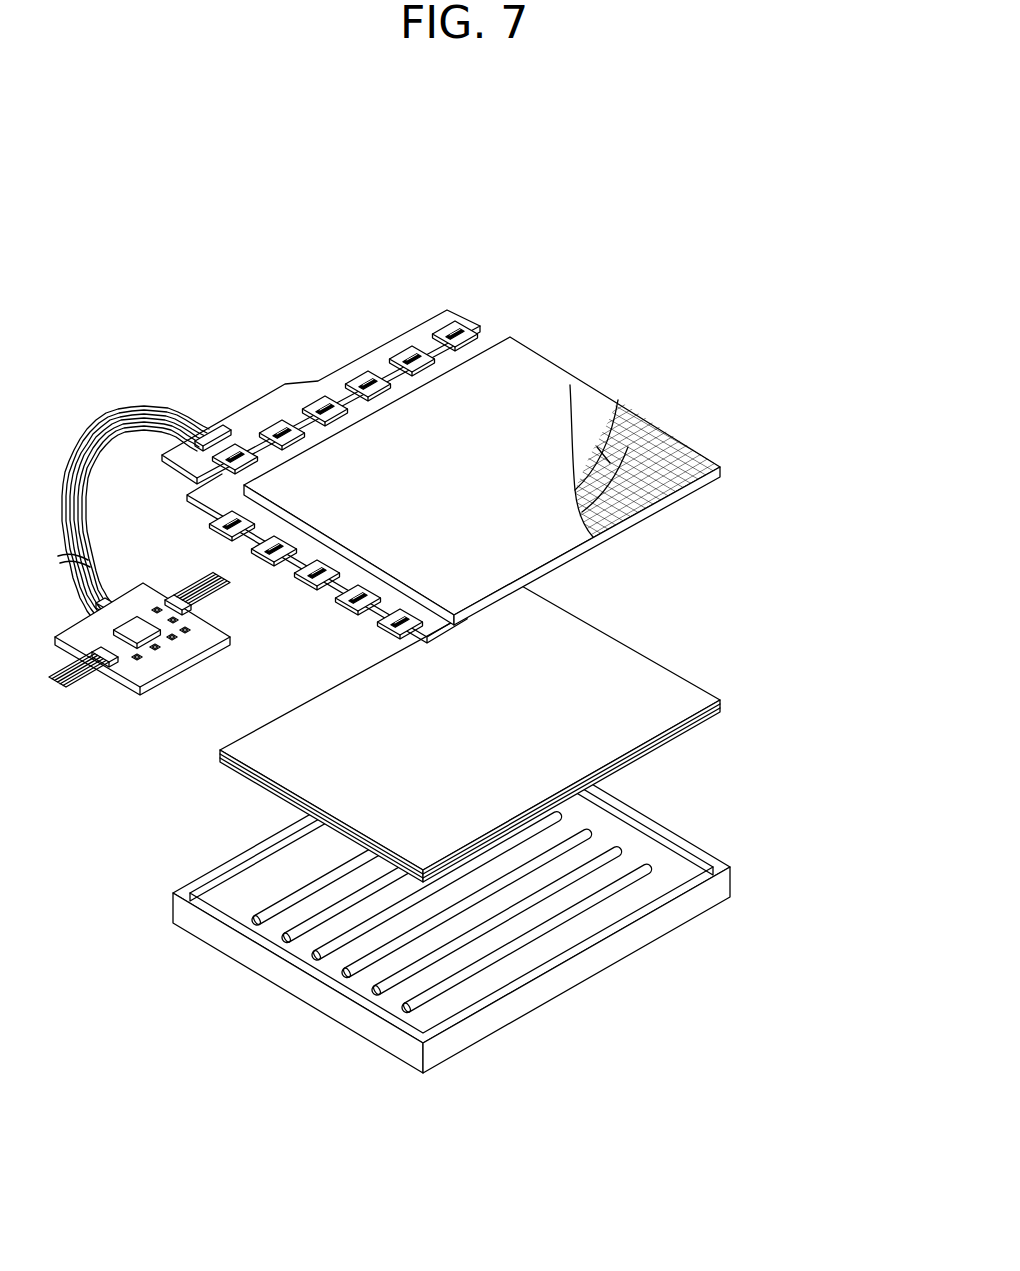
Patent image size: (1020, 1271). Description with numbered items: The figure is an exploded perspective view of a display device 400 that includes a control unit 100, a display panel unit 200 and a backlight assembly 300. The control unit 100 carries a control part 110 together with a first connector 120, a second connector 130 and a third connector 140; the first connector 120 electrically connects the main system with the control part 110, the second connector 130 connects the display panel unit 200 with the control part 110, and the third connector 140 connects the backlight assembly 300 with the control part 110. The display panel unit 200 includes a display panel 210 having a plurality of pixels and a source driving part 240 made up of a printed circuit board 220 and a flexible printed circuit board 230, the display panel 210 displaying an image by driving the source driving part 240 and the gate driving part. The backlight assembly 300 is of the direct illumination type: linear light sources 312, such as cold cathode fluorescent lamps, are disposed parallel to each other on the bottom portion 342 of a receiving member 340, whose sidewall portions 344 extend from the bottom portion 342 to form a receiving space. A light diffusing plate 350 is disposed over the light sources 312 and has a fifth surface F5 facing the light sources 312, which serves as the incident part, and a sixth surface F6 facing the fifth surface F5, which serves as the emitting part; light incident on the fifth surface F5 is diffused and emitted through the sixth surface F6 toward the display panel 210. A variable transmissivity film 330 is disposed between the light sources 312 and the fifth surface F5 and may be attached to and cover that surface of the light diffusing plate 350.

The control unit 100 is at (175, 609).
The control part 110 is at (137, 618).
The first connector 120 is at (90, 683).
The second connector 130 is at (122, 428).
The third connector 140 is at (220, 603).
The display panel unit 200 is at (470, 411).
The display panel 210 is at (570, 385).
The printed circuit board 220 is at (436, 318).
The flexible printed circuit board 230 is at (455, 324).
The source driving part 240 is at (359, 427).
The backlight assembly 300 is at (520, 839).
The light sources 312 is at (337, 940).
The variable transmissivity film 330 is at (522, 733).
The receiving member 340 is at (451, 905).
The bottom portion 342 is at (442, 999).
The sidewall portions 344 is at (455, 1037).
The light diffusing plate 350 is at (522, 761).
The display device 400 is at (290, 302).
The fifth surface F5 is at (720, 702).
The sixth surface F6 is at (641, 698).